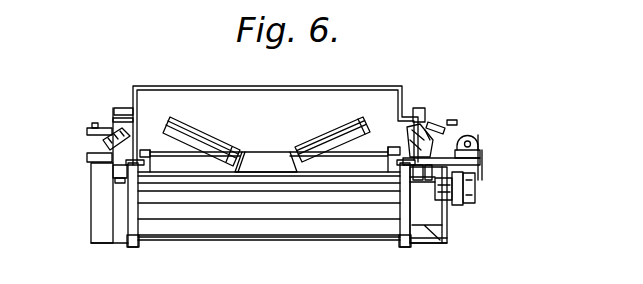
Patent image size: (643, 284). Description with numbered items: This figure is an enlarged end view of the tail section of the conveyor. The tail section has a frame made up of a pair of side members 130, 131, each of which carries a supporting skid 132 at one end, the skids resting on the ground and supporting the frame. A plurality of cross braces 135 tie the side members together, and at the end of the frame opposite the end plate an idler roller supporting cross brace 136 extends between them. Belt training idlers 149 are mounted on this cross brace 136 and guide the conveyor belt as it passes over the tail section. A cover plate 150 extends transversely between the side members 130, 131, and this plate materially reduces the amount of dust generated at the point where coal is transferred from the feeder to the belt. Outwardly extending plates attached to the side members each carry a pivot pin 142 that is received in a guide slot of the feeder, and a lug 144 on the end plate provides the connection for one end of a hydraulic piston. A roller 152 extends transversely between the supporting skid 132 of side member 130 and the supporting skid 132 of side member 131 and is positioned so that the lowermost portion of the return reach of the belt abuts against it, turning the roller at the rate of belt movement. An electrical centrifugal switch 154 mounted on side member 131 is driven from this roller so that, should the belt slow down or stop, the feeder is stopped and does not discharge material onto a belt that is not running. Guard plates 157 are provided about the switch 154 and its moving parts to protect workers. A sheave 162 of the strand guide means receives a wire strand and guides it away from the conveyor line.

The side member 130 is at (128, 205).
The side member 131 is at (446, 221).
The supporting skid 132 is at (132, 248).
The cross brace 135 is at (204, 189).
The idler roller supporting cross brace 136 is at (261, 160).
The pivot pin 142 is at (96, 124).
The lug 144 is at (478, 143).
The belt training idler 149 is at (195, 131).
The cover plate 150 is at (231, 86).
The roller 152 is at (256, 234).
The electrical centrifugal switch 154 is at (476, 187).
The guard plate 157 is at (442, 239).
The sheave 162 is at (100, 140).